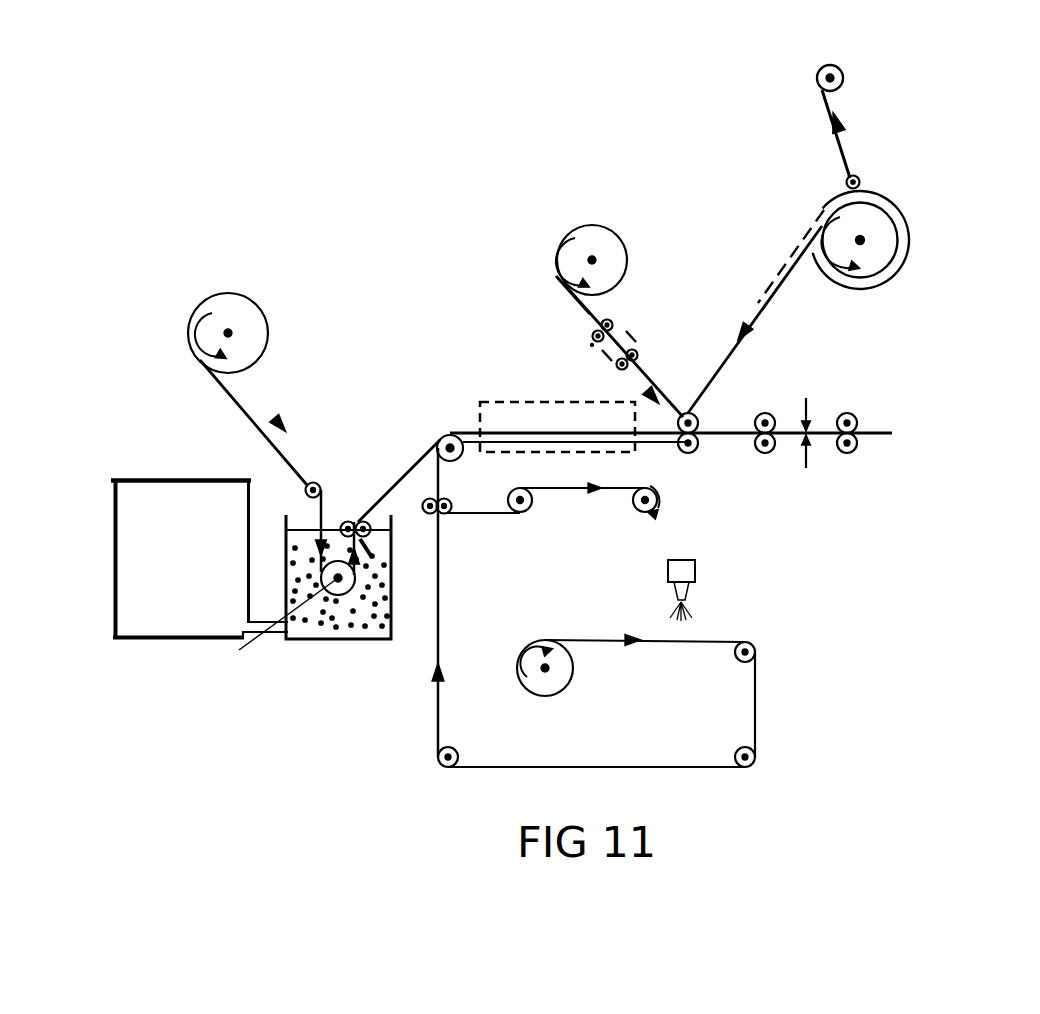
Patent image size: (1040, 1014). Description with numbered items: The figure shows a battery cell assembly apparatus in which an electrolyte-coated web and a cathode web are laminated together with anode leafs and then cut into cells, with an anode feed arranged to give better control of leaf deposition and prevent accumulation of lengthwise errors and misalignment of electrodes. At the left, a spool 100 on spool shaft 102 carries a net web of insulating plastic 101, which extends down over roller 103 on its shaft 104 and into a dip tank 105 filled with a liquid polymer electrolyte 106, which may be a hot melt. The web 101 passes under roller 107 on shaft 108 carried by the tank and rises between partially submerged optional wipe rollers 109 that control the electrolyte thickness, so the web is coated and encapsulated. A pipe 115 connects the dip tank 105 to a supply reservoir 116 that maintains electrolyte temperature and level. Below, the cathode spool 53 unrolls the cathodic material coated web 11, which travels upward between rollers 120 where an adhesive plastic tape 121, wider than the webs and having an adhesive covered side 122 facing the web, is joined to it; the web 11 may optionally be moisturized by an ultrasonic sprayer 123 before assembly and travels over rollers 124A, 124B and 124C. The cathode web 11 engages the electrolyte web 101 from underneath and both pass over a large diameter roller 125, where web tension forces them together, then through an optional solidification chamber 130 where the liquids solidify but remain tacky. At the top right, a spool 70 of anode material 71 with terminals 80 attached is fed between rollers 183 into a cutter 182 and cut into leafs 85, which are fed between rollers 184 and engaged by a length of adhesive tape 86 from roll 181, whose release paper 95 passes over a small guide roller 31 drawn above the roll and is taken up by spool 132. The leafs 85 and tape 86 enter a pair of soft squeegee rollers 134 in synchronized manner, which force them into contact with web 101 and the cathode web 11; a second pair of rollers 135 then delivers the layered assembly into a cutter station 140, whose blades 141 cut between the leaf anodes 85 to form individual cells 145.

The cathodic material coated web 11 is at (438, 648).
The guide roller 31 is at (846, 183).
The cathode spool 53 is at (560, 680).
The spool of anode material 70 is at (600, 298).
The anode material 71 is at (624, 219).
The terminals 80 is at (563, 298).
The anode leafs 85 is at (660, 397).
The anode leaf carrying adhesive tape 86 is at (788, 273).
The release paper 95 is at (828, 110).
The spool 100 is at (271, 288).
The net web of insulating plastic 101 is at (245, 400).
The spool shaft 102 is at (228, 333).
The roller 103 is at (318, 482).
The shaft 104 is at (320, 483).
The dip tank 105 is at (355, 682).
The polymer electrolyte 106 is at (370, 633).
The roller 107 is at (283, 620).
The shaft 108 is at (321, 592).
The wipe rollers 109 is at (371, 545).
The pipe 115 is at (239, 650).
The supply reservoir 116 is at (70, 570).
The rollers 120 is at (436, 514).
The adhesive plastic tape 121 is at (505, 515).
The adhesive covered side 122 is at (480, 513).
The ultrasonic sprayer 123 is at (697, 573).
The roller 124A is at (755, 652).
The roller 124B is at (755, 750).
The roller 124C is at (440, 755).
The large diameter roller 125 is at (438, 440).
The solidification chamber 130 is at (525, 395).
The take-up spool 132 is at (845, 78).
The soft squeegee rollers 134 is at (693, 410).
The second pair of rollers 135 is at (766, 412).
The cutter station 140 is at (810, 407).
The blades 141 is at (808, 462).
The individual cells 145 is at (890, 433).
The roll of adhesive tape 181 is at (887, 255).
The cutter 182 is at (598, 342).
The rollers 183 is at (608, 325).
The rollers 184 is at (633, 355).